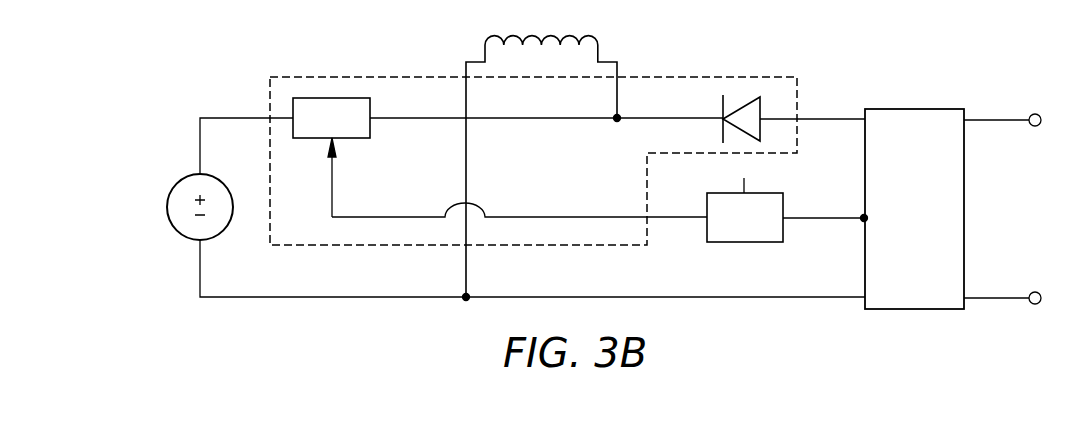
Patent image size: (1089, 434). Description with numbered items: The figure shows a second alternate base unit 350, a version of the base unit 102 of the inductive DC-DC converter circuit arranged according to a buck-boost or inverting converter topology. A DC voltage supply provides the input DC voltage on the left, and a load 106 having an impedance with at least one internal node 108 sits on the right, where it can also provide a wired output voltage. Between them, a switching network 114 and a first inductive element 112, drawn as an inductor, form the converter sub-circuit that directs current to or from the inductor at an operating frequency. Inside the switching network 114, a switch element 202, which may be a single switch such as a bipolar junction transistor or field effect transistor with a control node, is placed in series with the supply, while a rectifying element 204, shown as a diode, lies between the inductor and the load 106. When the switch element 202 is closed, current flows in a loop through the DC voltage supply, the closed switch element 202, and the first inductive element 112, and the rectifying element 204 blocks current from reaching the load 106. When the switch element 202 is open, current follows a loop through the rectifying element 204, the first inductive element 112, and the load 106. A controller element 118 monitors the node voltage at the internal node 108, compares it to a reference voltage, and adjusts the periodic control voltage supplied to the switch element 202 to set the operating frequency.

The base unit 102 is at (180, 178).
The first inductive element 112 is at (507, 44).
The switching network 114 is at (710, 78).
The switch element 202 is at (352, 138).
The rectifying element 204 is at (722, 118).
The controller element 118 is at (743, 242).
The internal node 108 is at (862, 222).
The load 106 is at (915, 108).
The second alternate base unit 350 is at (720, 346).